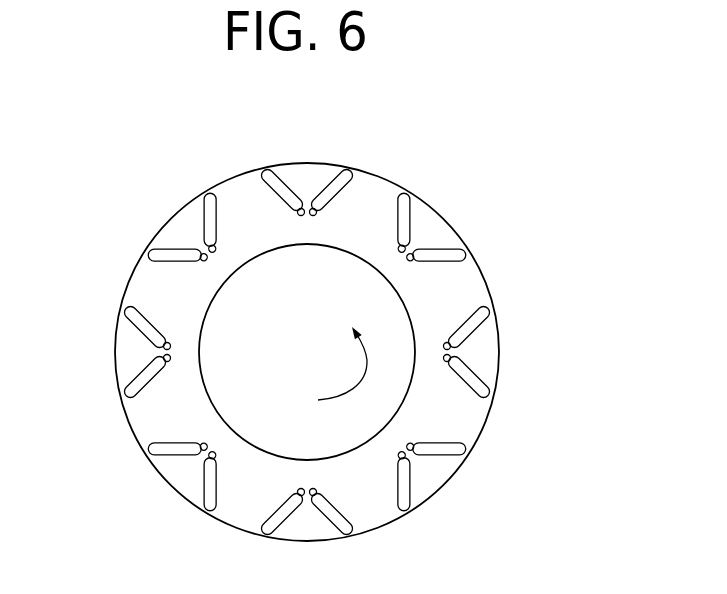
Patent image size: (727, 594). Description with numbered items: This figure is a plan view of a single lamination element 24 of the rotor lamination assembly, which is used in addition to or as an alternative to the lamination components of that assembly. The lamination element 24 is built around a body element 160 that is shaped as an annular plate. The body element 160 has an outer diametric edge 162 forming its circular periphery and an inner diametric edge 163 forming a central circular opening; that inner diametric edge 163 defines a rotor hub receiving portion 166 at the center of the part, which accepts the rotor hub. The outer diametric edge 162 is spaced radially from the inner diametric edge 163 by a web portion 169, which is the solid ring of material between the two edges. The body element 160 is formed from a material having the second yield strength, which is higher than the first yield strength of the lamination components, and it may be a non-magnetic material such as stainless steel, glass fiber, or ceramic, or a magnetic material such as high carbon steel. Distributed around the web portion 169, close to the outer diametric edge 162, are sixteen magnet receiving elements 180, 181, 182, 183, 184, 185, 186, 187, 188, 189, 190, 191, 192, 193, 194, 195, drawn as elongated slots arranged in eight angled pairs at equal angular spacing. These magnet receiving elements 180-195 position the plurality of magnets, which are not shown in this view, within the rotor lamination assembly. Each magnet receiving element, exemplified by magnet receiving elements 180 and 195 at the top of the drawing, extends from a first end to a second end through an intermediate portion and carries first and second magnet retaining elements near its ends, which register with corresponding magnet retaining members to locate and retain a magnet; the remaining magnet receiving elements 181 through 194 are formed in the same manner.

The lamination element 24 is at (475, 554).
The body element 160 is at (496, 419).
The outer diametric edge 162 is at (233, 528).
The inner diametric edge 163 is at (203, 325).
The rotor hub receiving portion 166 is at (317, 371).
The web portion 169 is at (240, 208).
The magnet receiving element 180 is at (342, 190).
The magnet receiving element 181 is at (398, 210).
The magnet receiving element 182 is at (440, 248).
The magnet receiving element 183 is at (478, 314).
The magnet receiving element 184 is at (475, 372).
The magnet receiving element 185 is at (453, 445).
The magnet receiving element 186 is at (413, 480).
The magnet receiving element 187 is at (330, 503).
The magnet receiving element 188 is at (287, 518).
The magnet receiving element 189 is at (215, 482).
The magnet receiving element 190 is at (173, 457).
The magnet receiving element 191 is at (143, 380).
The magnet receiving element 192 is at (132, 330).
The magnet receiving element 193 is at (175, 262).
The magnet receiving element 194 is at (203, 220).
The magnet receiving element 195 is at (288, 184).